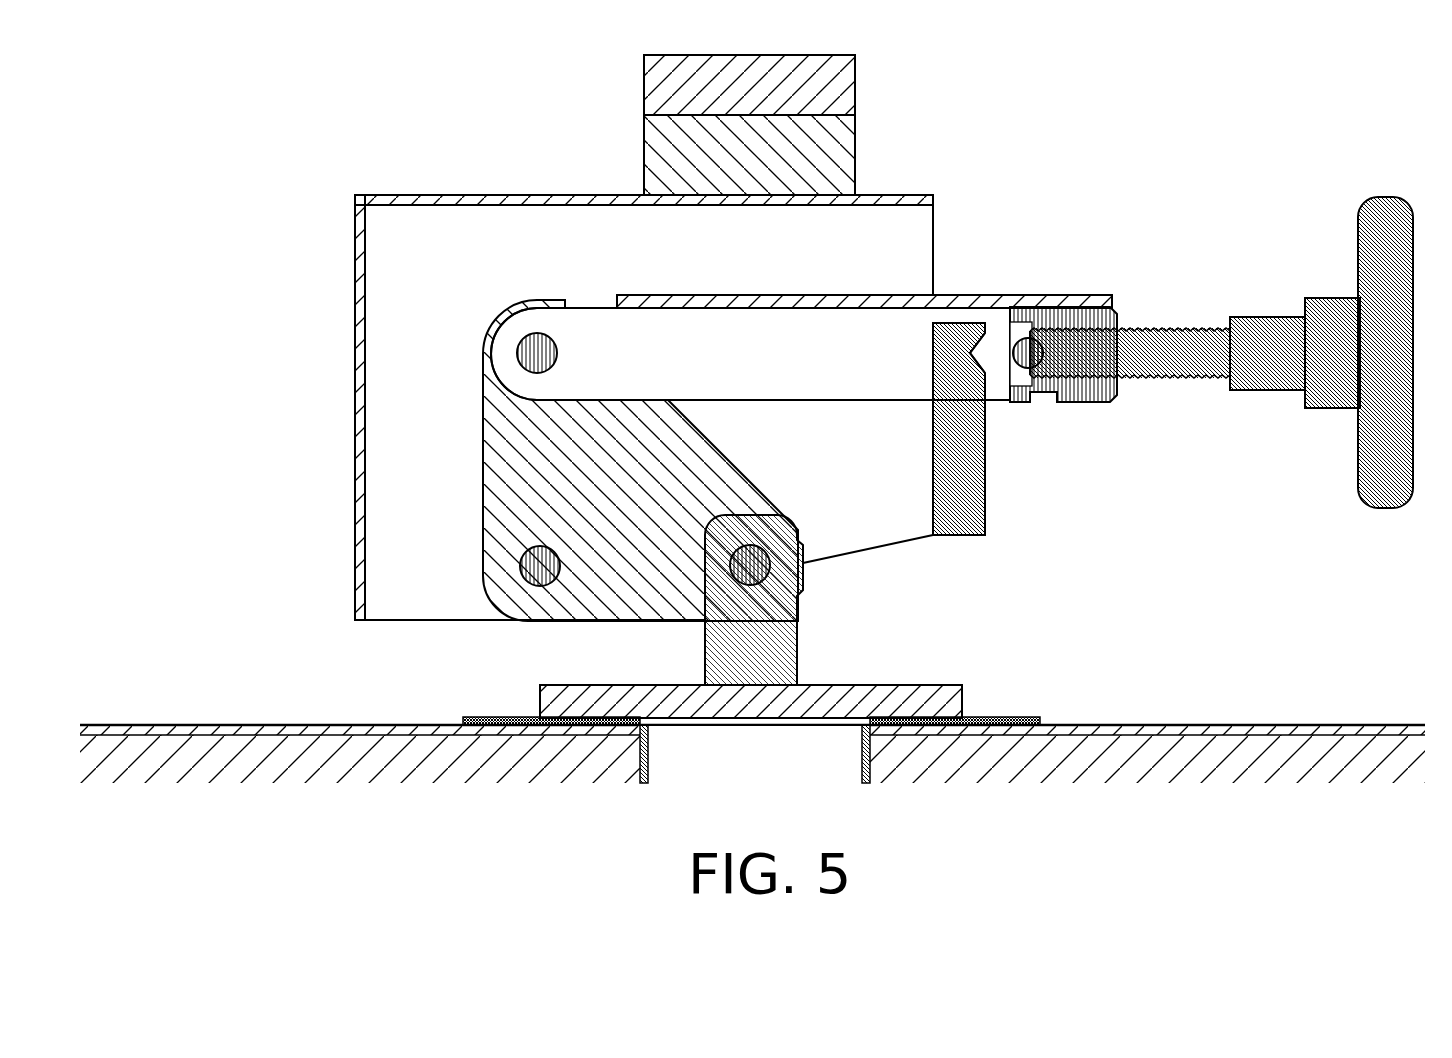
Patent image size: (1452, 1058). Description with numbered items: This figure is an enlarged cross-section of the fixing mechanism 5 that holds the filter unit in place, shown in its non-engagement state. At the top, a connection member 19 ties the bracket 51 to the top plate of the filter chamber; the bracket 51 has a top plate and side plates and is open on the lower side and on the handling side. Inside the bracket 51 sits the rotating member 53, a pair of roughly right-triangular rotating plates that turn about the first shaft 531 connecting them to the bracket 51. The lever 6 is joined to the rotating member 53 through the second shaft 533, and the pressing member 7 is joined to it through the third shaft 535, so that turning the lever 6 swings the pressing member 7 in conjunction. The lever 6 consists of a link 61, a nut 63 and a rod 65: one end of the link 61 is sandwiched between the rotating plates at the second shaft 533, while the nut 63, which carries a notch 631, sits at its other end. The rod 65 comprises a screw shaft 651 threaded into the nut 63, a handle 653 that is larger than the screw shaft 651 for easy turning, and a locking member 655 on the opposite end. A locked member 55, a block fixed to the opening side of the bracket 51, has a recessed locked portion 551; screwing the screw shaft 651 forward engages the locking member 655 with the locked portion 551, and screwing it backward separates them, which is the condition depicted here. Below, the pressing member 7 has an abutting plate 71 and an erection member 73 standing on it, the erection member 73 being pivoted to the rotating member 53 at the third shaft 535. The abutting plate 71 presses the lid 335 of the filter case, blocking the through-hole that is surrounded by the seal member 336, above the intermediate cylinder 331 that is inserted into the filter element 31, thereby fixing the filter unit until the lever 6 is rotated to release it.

The fixing mechanism 5 is at (280, 188).
The connection member 19 is at (848, 90).
The bracket 51 is at (452, 197).
The lever 6 is at (598, 270).
The link 61 is at (830, 297).
The rotating member 53 is at (487, 442).
The second shaft 533 is at (530, 362).
The first shaft 531 is at (530, 562).
The third shaft 535 is at (757, 558).
The locked member 55 is at (988, 512).
The locked portion 551 is at (980, 356).
The nut 63 is at (1115, 315).
The notch 631 is at (1050, 408).
The rod 65 is at (1225, 460).
The screw shaft 651 is at (1187, 338).
The handle 653 is at (1367, 205).
The locking member 655 is at (1037, 355).
The pressing member 7 is at (888, 622).
The abutting plate 71 is at (913, 693).
The erection member 73 is at (790, 633).
The filter element 31 is at (273, 752).
The intermediate cylinder 331 is at (640, 722).
The lid 335 is at (1140, 722).
The seal member 336 is at (490, 717).